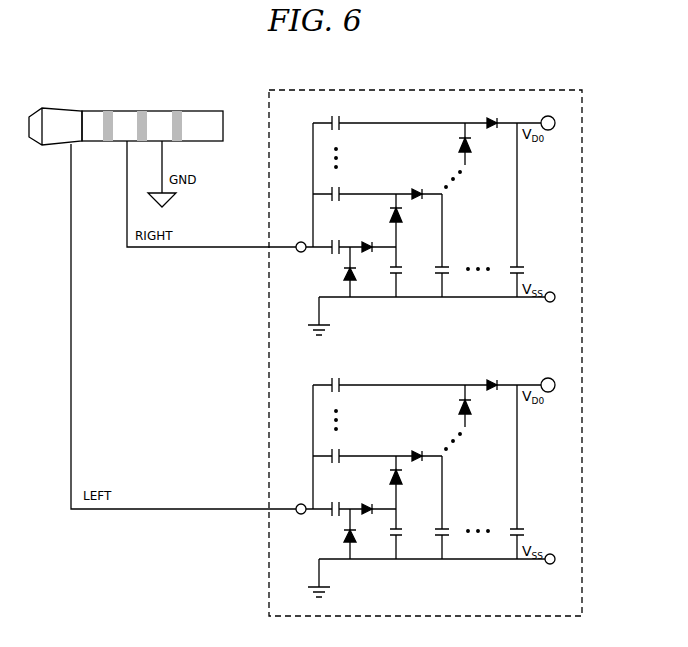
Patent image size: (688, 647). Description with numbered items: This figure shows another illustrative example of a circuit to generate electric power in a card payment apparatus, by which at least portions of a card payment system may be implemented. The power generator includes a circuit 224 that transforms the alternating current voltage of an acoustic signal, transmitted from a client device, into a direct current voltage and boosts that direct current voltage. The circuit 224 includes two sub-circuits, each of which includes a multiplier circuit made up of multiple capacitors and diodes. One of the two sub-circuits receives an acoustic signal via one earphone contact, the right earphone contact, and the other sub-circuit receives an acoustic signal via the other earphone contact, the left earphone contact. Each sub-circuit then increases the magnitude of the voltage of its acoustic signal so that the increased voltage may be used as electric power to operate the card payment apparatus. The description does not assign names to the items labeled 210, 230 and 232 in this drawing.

The circuit 224 is at (426, 337).
The earphone plug 210 is at (126, 120).
The right-channel charge pump 230 is at (425, 225).
The left-channel charge pump 232 is at (425, 487).